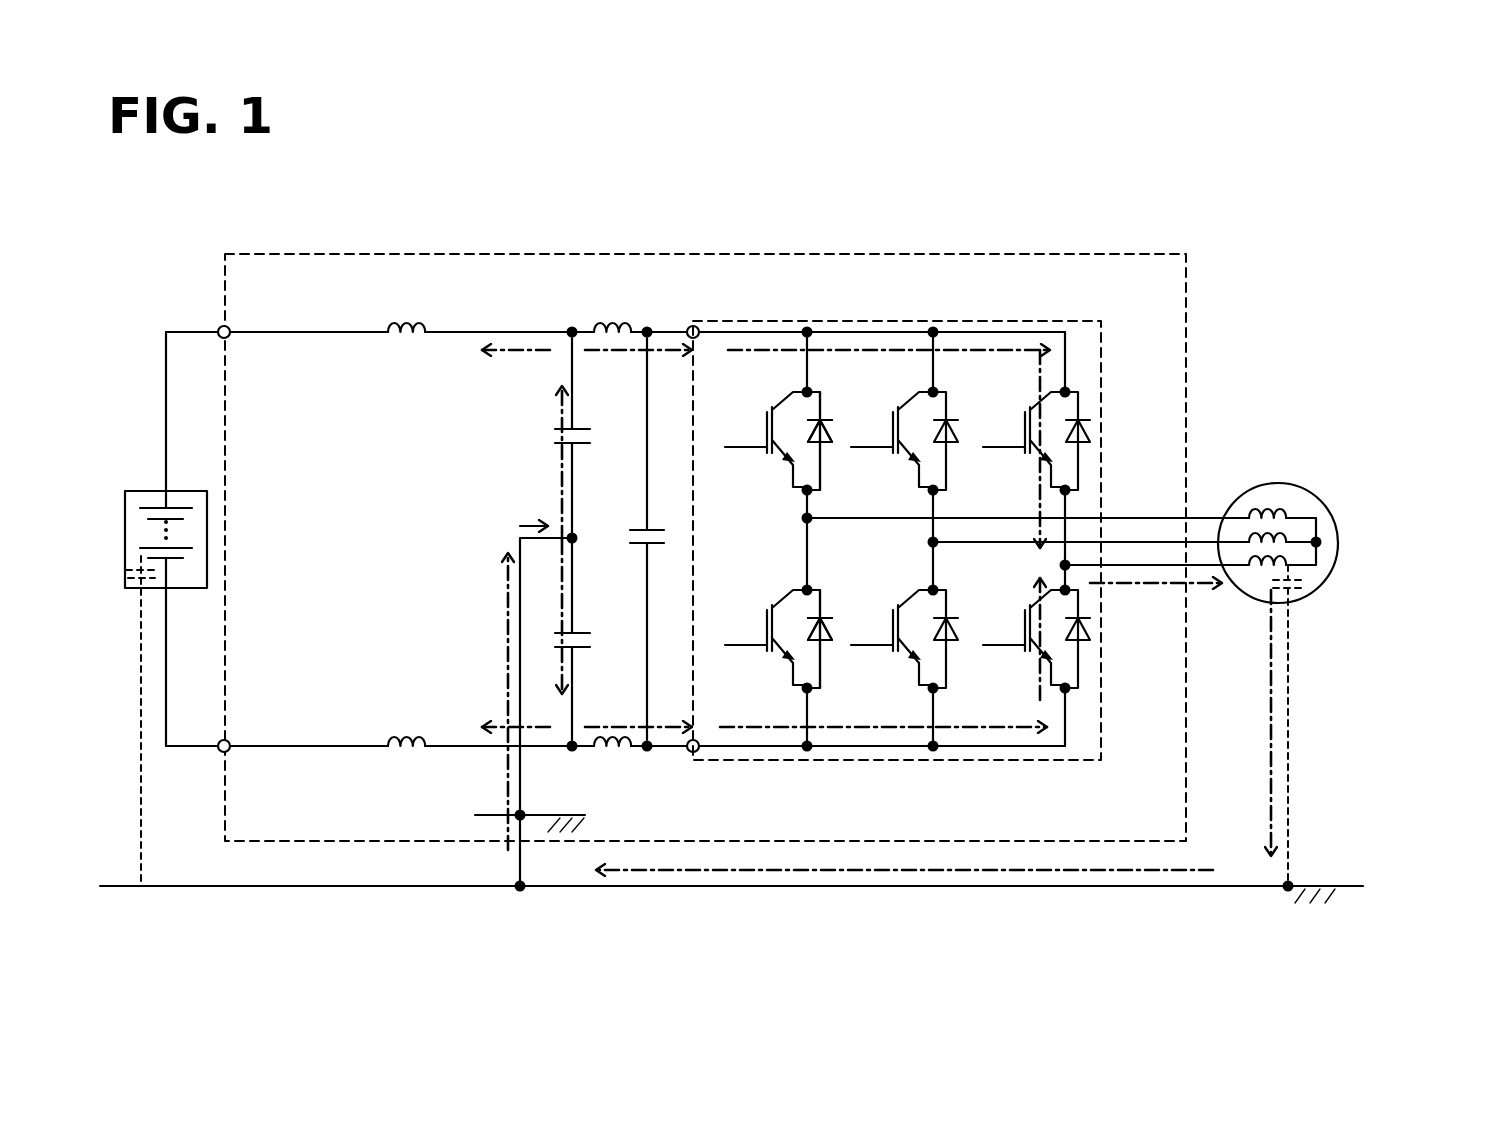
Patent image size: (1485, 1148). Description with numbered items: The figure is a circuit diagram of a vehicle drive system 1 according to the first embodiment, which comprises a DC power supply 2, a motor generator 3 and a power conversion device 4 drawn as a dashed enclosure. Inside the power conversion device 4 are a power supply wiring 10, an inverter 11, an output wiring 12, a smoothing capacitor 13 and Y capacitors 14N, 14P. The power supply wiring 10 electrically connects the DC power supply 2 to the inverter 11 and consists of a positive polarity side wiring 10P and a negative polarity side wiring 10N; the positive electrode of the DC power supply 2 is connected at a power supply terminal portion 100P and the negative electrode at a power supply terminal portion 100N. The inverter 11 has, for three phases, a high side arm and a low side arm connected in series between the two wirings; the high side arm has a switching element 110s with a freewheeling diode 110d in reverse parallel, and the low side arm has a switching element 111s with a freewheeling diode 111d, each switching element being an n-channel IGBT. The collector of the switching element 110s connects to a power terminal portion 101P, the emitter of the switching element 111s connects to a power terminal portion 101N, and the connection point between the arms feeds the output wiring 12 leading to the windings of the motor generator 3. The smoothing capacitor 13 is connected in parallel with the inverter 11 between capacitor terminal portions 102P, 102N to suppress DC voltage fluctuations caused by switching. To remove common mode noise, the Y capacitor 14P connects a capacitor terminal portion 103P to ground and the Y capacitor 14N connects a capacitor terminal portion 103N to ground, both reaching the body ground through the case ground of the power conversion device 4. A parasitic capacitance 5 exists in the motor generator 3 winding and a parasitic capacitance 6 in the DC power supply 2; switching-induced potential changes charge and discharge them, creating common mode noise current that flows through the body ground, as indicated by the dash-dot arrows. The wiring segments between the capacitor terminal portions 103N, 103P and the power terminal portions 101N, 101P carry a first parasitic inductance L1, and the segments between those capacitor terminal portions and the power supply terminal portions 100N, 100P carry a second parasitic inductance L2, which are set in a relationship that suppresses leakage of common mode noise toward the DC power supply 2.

The vehicle drive system 1 is at (1316, 303).
The DC power supply 2 is at (186, 491).
The motor generator 3 is at (1271, 483).
The power conversion device 4 is at (1139, 254).
The parasitic capacitance 5 is at (1304, 596).
The parasitic capacitance 6 is at (132, 590).
The power supply wiring 10 is at (290, 326).
The positive polarity side wiring 10P is at (333, 330).
The negative polarity side wiring 10N is at (326, 744).
The inverter 11 is at (927, 540).
The output wiring 12 is at (1140, 515).
The smoothing capacitor 13 is at (658, 527).
The Y capacitor 14P is at (586, 426).
The Y capacitor 14N is at (586, 629).
The power supply terminal portion 100P is at (220, 326).
The power supply terminal portion 100N is at (231, 740).
The power terminal portion 101P is at (698, 325).
The power terminal portion 101N is at (700, 753).
The capacitor terminal portion 102P is at (648, 326).
The capacitor terminal portion 102N is at (648, 755).
The capacitor terminal portion 103P is at (570, 326).
The capacitor terminal portion 103N is at (572, 754).
The switching element 110s is at (760, 438).
The freewheeling diode 110d is at (836, 432).
The switching element 111s is at (760, 636).
The freewheeling diode 111d is at (836, 630).
The parasitic inductance L1 is at (610, 323).
The parasitic inductance L2 is at (403, 323).